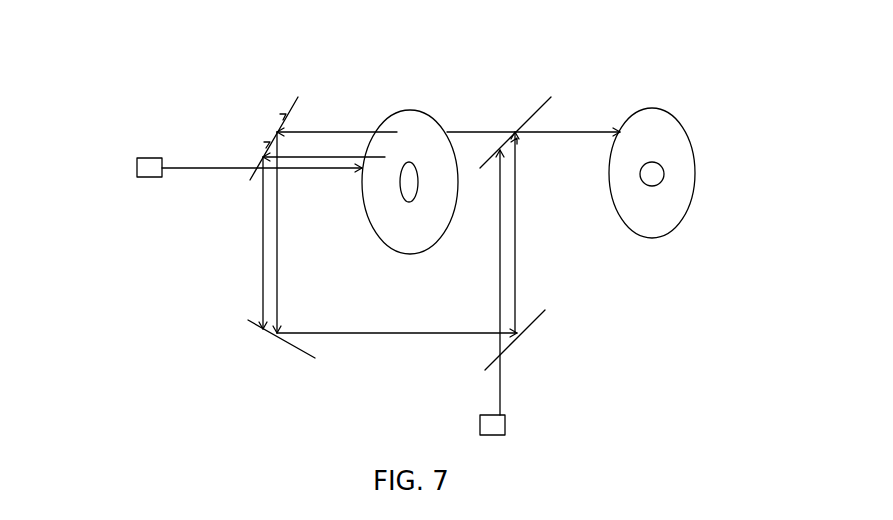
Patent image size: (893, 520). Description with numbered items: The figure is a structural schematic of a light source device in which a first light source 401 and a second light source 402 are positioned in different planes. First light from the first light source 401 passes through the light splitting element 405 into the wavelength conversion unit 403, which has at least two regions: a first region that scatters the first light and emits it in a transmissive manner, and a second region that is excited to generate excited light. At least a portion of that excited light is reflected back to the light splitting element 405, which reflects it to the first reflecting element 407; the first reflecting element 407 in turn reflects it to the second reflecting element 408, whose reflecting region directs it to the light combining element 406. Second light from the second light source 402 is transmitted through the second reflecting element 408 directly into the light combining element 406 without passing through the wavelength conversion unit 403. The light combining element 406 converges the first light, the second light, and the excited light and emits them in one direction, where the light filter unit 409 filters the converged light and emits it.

The first light source 401 is at (135, 177).
The second light source 402 is at (481, 428).
The wavelength conversion unit 403 is at (405, 110).
The light splitting element 405 is at (288, 114).
The light combining element 406 is at (545, 100).
The first reflecting element 407 is at (258, 333).
The second reflecting element 408 is at (541, 321).
The light filter unit 409 is at (667, 233).